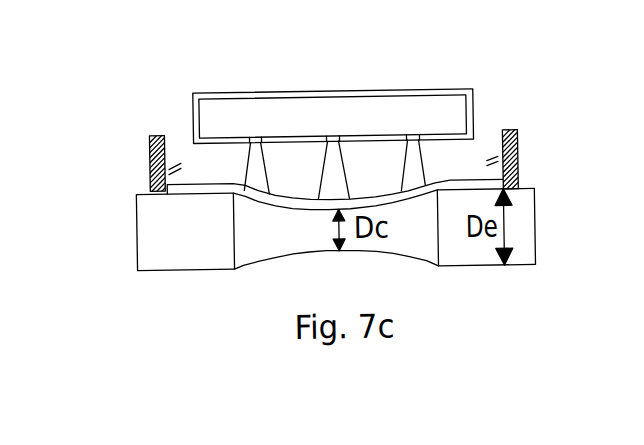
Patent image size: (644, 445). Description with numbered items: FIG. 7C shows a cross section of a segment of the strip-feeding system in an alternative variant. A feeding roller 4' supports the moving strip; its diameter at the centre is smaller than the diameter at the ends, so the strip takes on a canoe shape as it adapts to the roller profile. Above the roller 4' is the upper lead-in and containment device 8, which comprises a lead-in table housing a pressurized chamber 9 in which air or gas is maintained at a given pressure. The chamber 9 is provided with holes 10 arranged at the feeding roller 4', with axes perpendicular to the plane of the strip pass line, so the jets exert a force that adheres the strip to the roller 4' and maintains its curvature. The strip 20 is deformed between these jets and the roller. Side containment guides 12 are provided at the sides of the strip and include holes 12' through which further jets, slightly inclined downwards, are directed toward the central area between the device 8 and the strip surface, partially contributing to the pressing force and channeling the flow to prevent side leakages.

The upper lead-in and containment device 8 is at (373, 91).
The pressurized chamber 9 is at (320, 113).
The holes 10 is at (252, 136).
The flexible substrate / membrane 20 is at (460, 185).
The side containment guides 12 is at (345, 126).
The holes 12' is at (347, 157).
The feeding rollers 4' is at (306, 255).